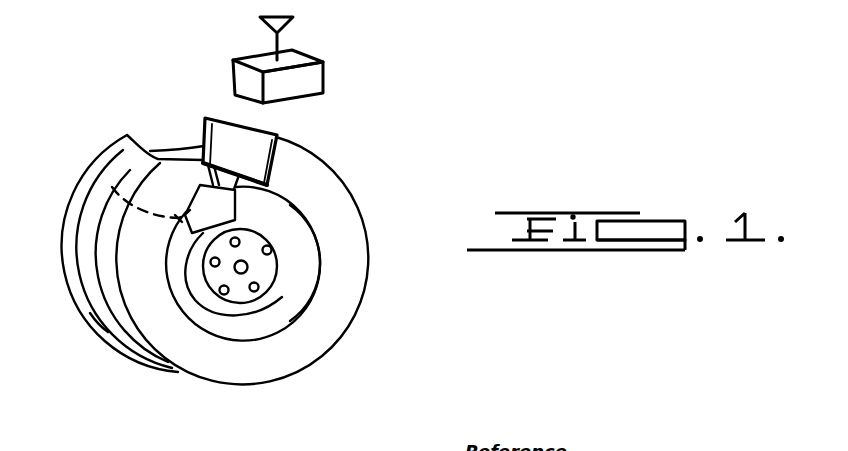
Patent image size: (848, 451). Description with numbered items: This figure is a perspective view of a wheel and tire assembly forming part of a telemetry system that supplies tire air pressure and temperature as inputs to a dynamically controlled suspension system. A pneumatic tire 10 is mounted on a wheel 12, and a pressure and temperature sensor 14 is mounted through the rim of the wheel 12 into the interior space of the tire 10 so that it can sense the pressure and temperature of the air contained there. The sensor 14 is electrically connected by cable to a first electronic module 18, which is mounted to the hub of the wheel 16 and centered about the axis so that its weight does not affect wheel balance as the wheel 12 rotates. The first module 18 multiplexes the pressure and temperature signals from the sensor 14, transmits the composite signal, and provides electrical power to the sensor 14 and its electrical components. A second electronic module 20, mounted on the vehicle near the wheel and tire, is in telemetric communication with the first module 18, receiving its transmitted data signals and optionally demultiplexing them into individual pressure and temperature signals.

The pneumatic tire 10 is at (193, 385).
The wheel 12 is at (280, 310).
The pressure and temperature sensor 14 is at (200, 183).
The hub of the wheel 16 is at (270, 234).
The first electronic module 18 is at (110, 172).
The second electronic module 20 is at (325, 77).